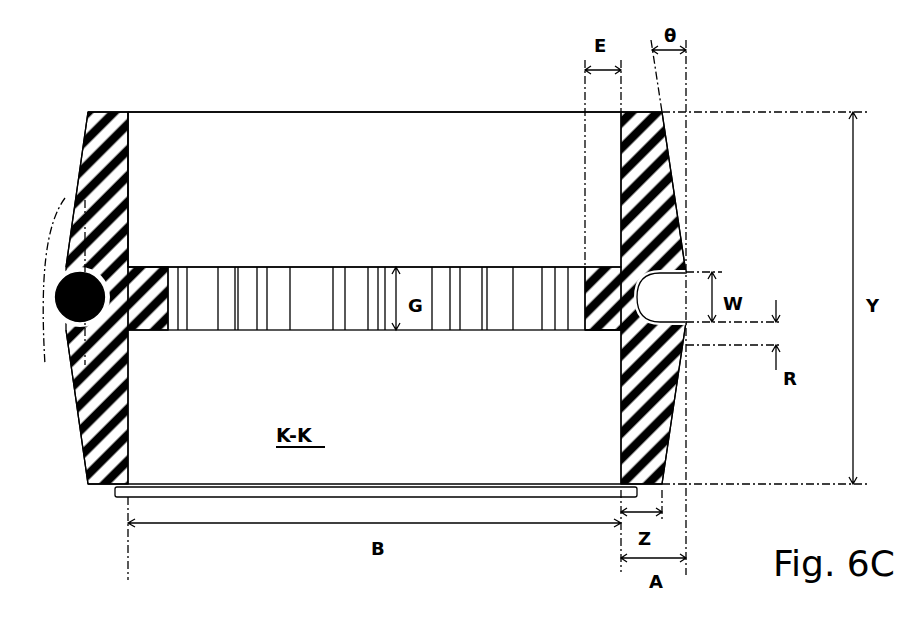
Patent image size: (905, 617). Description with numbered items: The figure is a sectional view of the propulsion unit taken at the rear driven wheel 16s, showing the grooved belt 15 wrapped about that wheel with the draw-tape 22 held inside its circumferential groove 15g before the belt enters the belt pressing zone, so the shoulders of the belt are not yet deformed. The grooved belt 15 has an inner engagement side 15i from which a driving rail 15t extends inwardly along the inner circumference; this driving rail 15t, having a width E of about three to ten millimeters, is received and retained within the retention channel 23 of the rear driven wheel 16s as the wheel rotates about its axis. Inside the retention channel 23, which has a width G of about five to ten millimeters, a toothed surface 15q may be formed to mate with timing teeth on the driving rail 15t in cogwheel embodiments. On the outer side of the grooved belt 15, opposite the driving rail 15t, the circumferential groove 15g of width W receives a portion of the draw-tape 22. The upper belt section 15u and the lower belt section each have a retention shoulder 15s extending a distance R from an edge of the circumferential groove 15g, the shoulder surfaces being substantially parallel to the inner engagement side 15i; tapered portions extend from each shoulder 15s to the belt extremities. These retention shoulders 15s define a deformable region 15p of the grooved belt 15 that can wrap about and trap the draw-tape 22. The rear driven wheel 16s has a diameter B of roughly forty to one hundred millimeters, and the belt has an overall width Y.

The grooved belt 15 is at (105, 112).
The upper belt section 15u is at (80, 147).
The inner engagement side 15i is at (129, 173).
The deformable region 15p is at (75, 402).
The retention shoulder 15s is at (684, 260).
The circumferential groove 15g is at (668, 296).
The driving rail 15t is at (142, 265).
The toothed surface 15q is at (530, 282).
The rear driven wheel 16s is at (392, 194).
The draw-tape 22 is at (57, 292).
The retention channel 23 is at (312, 283).